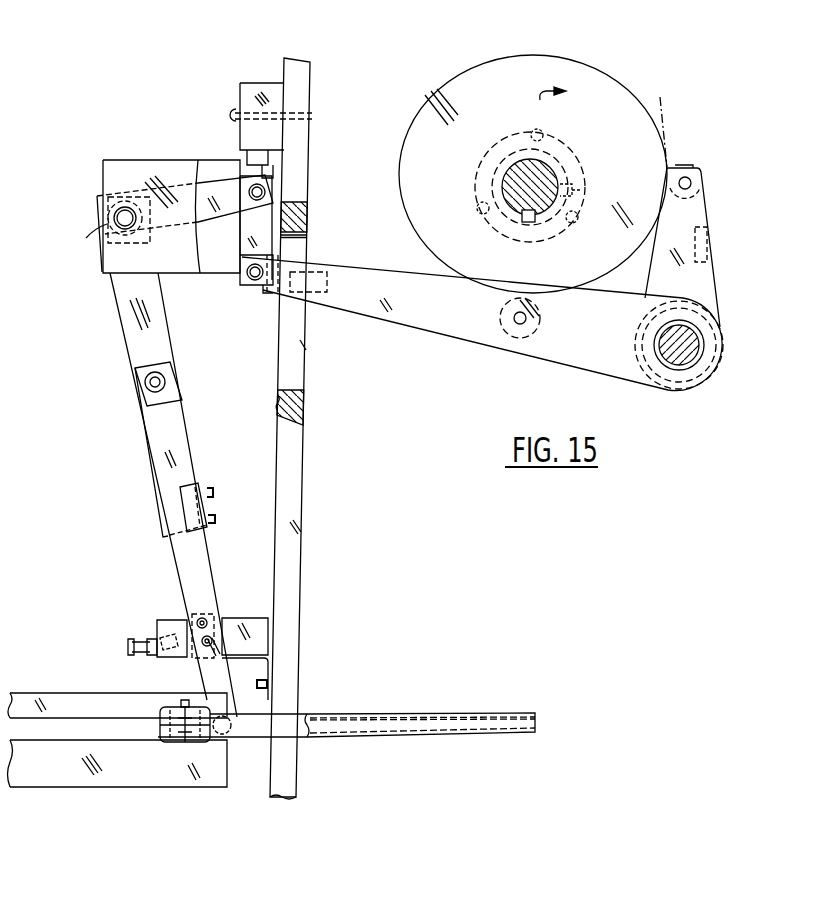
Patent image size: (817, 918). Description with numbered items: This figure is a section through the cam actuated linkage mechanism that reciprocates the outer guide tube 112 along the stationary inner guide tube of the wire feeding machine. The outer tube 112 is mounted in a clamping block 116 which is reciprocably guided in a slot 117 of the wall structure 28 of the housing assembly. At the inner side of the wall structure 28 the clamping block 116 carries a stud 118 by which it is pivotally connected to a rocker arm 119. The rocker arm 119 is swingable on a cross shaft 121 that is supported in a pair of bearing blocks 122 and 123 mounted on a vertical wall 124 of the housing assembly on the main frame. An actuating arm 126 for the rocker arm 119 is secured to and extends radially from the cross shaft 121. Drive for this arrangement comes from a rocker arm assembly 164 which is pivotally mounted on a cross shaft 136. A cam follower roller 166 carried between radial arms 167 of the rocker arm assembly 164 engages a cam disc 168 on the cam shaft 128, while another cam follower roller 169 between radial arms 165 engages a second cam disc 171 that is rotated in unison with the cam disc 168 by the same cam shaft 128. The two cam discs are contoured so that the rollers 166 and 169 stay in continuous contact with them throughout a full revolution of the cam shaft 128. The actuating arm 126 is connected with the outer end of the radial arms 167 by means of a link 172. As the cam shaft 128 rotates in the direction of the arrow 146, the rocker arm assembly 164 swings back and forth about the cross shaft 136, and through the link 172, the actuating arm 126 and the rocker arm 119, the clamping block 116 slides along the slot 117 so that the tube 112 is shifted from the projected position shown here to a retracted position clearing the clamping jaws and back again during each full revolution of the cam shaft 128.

The wall structure 28 is at (118, 781).
The outer tube 112 is at (369, 713).
The clamping block 116 is at (174, 742).
The slot 117 is at (50, 716).
The stud 118 is at (229, 742).
The rocker arm 119 is at (122, 322).
The cross shaft 121 is at (118, 222).
The bearing block 122 is at (128, 160).
The bearing block 123 is at (210, 162).
The vertical wall 124 is at (310, 123).
The actuating arm 126 is at (212, 216).
The cam shaft 128 is at (547, 177).
The cross shaft 136 is at (692, 353).
The arrow 146 is at (547, 105).
The rocker arm assembly 164 is at (710, 275).
The radial arms 165 is at (702, 217).
The cam follower roller 166 is at (520, 336).
The radial arms 167 is at (432, 322).
The cam disc 168 is at (603, 78).
The cam follower roller 169 is at (688, 165).
The cam disc 171 is at (664, 108).
The link 172 is at (242, 252).